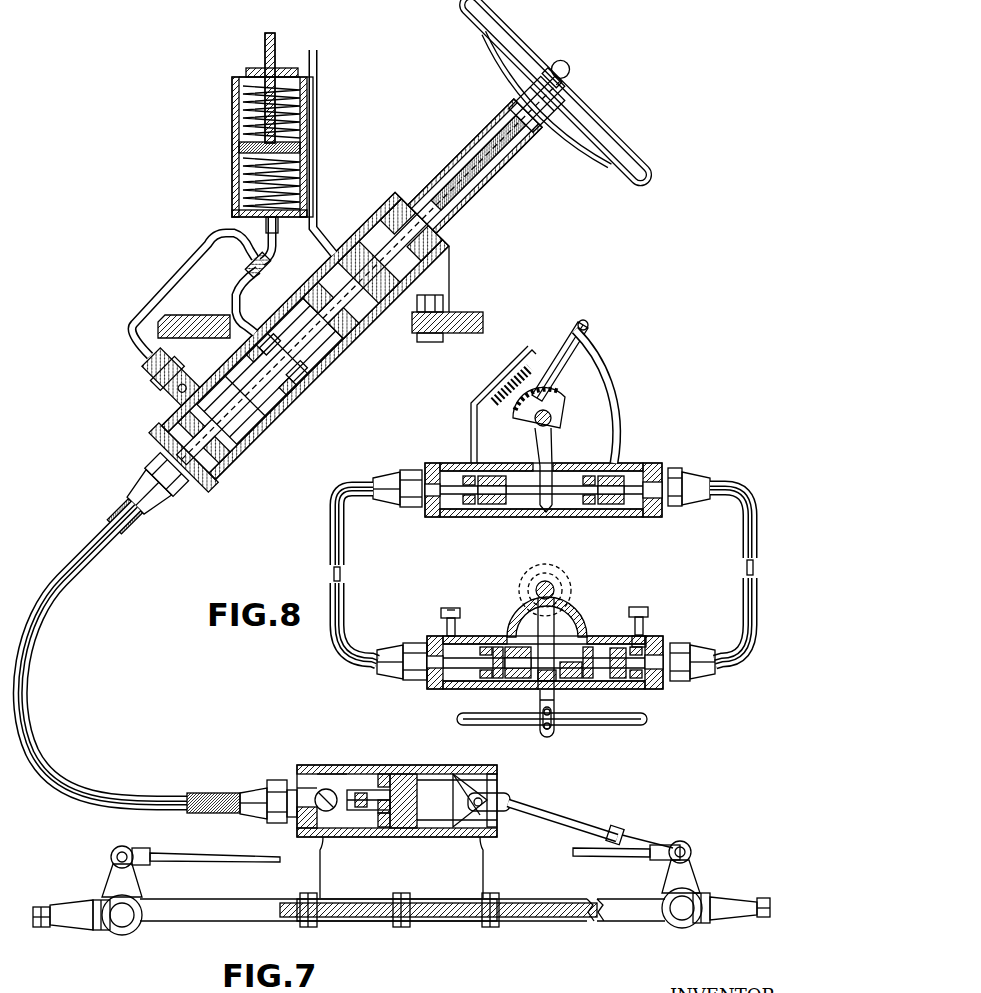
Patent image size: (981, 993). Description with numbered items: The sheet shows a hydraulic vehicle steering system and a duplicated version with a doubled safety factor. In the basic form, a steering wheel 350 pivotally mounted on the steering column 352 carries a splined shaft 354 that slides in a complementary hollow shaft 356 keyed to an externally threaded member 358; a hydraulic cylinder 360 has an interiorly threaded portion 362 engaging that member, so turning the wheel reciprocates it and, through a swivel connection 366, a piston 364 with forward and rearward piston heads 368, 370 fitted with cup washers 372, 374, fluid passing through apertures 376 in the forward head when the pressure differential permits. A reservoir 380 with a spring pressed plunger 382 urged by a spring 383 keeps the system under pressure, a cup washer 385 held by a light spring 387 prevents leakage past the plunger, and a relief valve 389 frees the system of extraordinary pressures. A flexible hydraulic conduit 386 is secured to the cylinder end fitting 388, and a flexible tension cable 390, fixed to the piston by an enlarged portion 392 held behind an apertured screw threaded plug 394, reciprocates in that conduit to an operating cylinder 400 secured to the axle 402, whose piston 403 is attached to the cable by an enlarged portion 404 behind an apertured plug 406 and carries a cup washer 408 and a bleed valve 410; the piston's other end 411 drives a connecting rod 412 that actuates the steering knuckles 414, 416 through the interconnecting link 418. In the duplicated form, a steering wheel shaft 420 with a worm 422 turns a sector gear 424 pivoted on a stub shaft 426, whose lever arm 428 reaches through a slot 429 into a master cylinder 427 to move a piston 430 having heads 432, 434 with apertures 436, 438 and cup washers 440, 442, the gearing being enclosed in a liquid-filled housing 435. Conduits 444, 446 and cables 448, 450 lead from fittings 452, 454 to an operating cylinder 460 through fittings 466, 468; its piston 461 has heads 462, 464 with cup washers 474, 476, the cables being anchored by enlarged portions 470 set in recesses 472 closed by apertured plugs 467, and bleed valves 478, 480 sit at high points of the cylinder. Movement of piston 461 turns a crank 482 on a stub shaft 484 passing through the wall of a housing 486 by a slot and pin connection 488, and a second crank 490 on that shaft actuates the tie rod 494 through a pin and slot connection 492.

In FIG. 8, the steering wheel 350 is at (524, 62).
In FIG. 8, the steering column 352 is at (443, 173).
In FIG. 8, the splined shaft 354 is at (463, 173).
In FIG. 8, the hollow shaft 356 is at (432, 193).
In FIG. 8, the externally threaded member 358 is at (380, 207).
In FIG. 8, the hydraulic cylinder 360 is at (348, 238).
In FIG. 8, the interiorly threaded portion 362 is at (449, 247).
In FIG. 8, the piston 364 is at (307, 380).
In FIG. 8, the swivel connection 366 is at (347, 307).
In FIG. 8, the forward piston head 368 is at (302, 393).
In FIG. 8, the rearward piston head 370 is at (348, 340).
In FIG. 8, the cup washer 372 is at (295, 410).
In FIG. 8, the cup washer 374 is at (345, 353).
In FIG. 8, the apertures 376 is at (227, 287).
In FIG. 8, the reservoir 380 is at (247, 142).
In FIG. 8, the spring pressed plunger 382 is at (247, 152).
In FIG. 8, the spring 383 is at (252, 115).
In FIG. 8, the cup washer 385 is at (300, 147).
In FIG. 8, the light spring 387 is at (247, 192).
In FIG. 8, the flexible hydraulic conduit 386 is at (77, 563).
In FIG. 8, the cylinder end fitting 388 is at (173, 437).
In FIG. 8, the relief valve 389 is at (160, 390).
In FIG. 8, the flexible tension cable 390 is at (133, 507).
In FIG. 7, the flexible tension cable 390 is at (217, 790).
In FIG. 8, the enlarged portion 392 is at (283, 427).
In FIG. 8, the apertured screw threaded plug 394 is at (253, 443).
In FIG. 8, the steering wheel shaft 420 is at (583, 327).
In FIG. 8, the worm 422 is at (532, 377).
In FIG. 8, the sector gear 424 is at (548, 381).
In FIG. 8, the stub shaft 426 is at (543, 417).
In FIG. 8, the master cylinder 427 is at (647, 513).
In FIG. 8, the lever arm 428 is at (543, 440).
In FIG. 8, the slot 429 is at (553, 463).
In FIG. 8, the piston 430 is at (523, 490).
In FIG. 8, the piston head 432 is at (490, 500).
In FIG. 8, the piston head 434 is at (583, 507).
In FIG. 8, the housing 435 is at (522, 352).
In FIG. 8, the aperture 436 is at (493, 493).
In FIG. 8, the aperture 438 is at (590, 462).
In FIG. 8, the cup washer 440 is at (463, 503).
In FIG. 8, the cup washer 442 is at (617, 510).
In FIG. 8, the conduit 444 is at (337, 540).
In FIG. 8, the conduit 446 is at (753, 507).
In FIG. 8, the cable 448 is at (335, 585).
In FIG. 8, the cable 450 is at (763, 570).
In FIG. 8, the fitting 452 is at (417, 478).
In FIG. 8, the fitting 454 is at (693, 467).
In FIG. 8, the operating cylinder 460 is at (587, 640).
In FIG. 8, the piston 461 is at (567, 673).
In FIG. 8, the piston head 462 is at (537, 670).
In FIG. 8, the piston head 464 is at (627, 687).
In FIG. 8, the fitting 466 is at (427, 647).
In FIG. 8, the apertured plugs 467 is at (467, 640).
In FIG. 8, the fitting 468 is at (663, 640).
In FIG. 8, the enlarged portions 470 is at (487, 663).
In FIG. 8, the recesses 472 is at (490, 647).
In FIG. 8, the cup washer 474 is at (515, 637).
In FIG. 8, the cup washer 476 is at (640, 607).
In FIG. 8, the bleed valve 478 is at (443, 612).
In FIG. 8, the bleed valve 480 is at (640, 612).
In FIG. 8, the crank 482 is at (537, 690).
In FIG. 8, the stub shaft 484 is at (540, 587).
In FIG. 8, the housing 486 is at (553, 547).
In FIG. 8, the slot and pin connection 488 is at (553, 720).
In FIG. 8, the second crank 490 is at (557, 727).
In FIG. 8, the pin and slot connection 492 is at (560, 733).
In FIG. 8, the tie rod 494 is at (647, 722).
In FIG. 7, the operating cylinder 400 is at (407, 777).
In FIG. 7, the axle 402 is at (460, 910).
In FIG. 7, the piston 403 is at (420, 783).
In FIG. 7, the enlarged portion 404 is at (370, 773).
In FIG. 7, the apertured screw threaded plug 406 is at (348, 775).
In FIG. 7, the cup washer 408 is at (383, 830).
In FIG. 7, the bleed valve 410 is at (320, 797).
In FIG. 7, the other end of piston 411 is at (493, 777).
In FIG. 7, the connecting rod 412 is at (583, 822).
In FIG. 7, the steering knuckle 414 is at (680, 880).
In FIG. 7, the steering knuckle 416 is at (123, 883).
In FIG. 7, the interconnecting link 418 is at (237, 857).